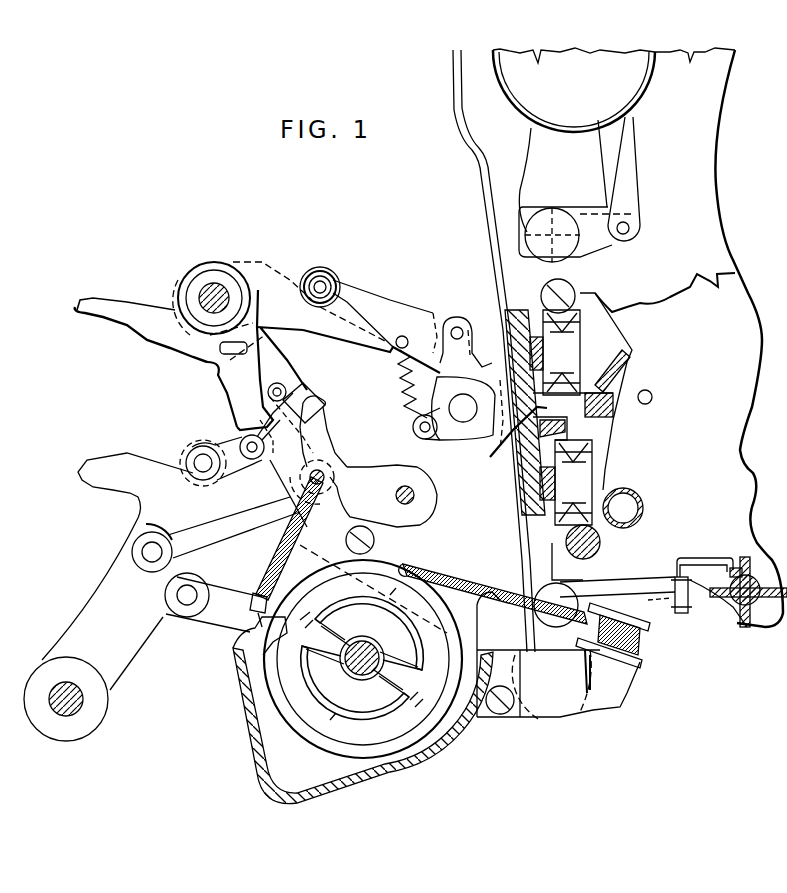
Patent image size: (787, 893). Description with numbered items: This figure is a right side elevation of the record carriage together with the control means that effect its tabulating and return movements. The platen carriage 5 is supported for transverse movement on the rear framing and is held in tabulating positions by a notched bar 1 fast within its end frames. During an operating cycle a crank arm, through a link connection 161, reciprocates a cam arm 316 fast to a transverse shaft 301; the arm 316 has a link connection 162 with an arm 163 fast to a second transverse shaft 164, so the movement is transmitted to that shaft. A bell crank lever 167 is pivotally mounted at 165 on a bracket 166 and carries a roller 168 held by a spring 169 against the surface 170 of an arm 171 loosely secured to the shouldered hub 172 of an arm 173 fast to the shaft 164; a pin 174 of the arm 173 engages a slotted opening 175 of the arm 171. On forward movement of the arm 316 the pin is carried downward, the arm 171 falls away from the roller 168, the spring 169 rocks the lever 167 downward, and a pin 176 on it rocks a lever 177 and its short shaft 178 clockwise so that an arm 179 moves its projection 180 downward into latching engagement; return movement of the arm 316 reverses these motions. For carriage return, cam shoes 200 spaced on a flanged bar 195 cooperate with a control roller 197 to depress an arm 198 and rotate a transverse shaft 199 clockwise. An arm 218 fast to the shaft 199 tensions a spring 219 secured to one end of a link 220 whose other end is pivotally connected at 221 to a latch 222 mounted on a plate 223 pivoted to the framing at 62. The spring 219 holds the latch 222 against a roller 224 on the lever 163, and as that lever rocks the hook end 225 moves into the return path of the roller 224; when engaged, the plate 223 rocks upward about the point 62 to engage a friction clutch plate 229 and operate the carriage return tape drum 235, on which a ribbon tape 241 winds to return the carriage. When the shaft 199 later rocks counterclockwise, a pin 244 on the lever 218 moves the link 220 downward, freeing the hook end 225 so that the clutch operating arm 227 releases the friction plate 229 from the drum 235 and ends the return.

The notched bar 1 is at (520, 237).
The platen carriage 5 is at (727, 248).
The pivot point 62 is at (412, 497).
The link connection 161 is at (215, 615).
The link connection 162 is at (147, 524).
The arm 163 is at (243, 363).
The second transverse shaft 164 is at (210, 292).
The pivot 165 is at (453, 330).
The bracket 166 is at (487, 350).
The bell crank lever 167 is at (383, 303).
The roller 168 is at (323, 287).
The spring 169 is at (410, 387).
The surface 170 is at (316, 275).
The arm 171 is at (297, 327).
The shouldered hub 172 is at (190, 292).
The arm 173 is at (260, 256).
The pin 174 is at (287, 389).
The slotted opening 175 is at (204, 362).
The pin 176 is at (433, 313).
The lever 177 is at (400, 347).
The short shaft 178 is at (472, 422).
The arm 179 is at (500, 447).
The projection 180 is at (553, 430).
The flanged bar 195 is at (740, 593).
The control roller 197 is at (683, 613).
The arm 198 is at (630, 593).
The transverse shaft 199 is at (560, 597).
The cam shoes 200 is at (715, 556).
The arm 218 is at (537, 703).
The spring 219 is at (483, 717).
The link 220 is at (337, 490).
The pivotal connection 221 is at (243, 442).
The latch 222 is at (220, 447).
The plate 223 is at (230, 482).
The roller 224 is at (305, 383).
The hook end 225 is at (320, 410).
The clutch operating arm 227 is at (233, 652).
The friction clutch plate 229 is at (383, 703).
The carriage return tape drum 235 is at (387, 570).
The ribbon tape 241 is at (510, 567).
The pin 244 is at (458, 738).
The transverse shaft 301 is at (73, 708).
The cam arm 316 is at (98, 598).